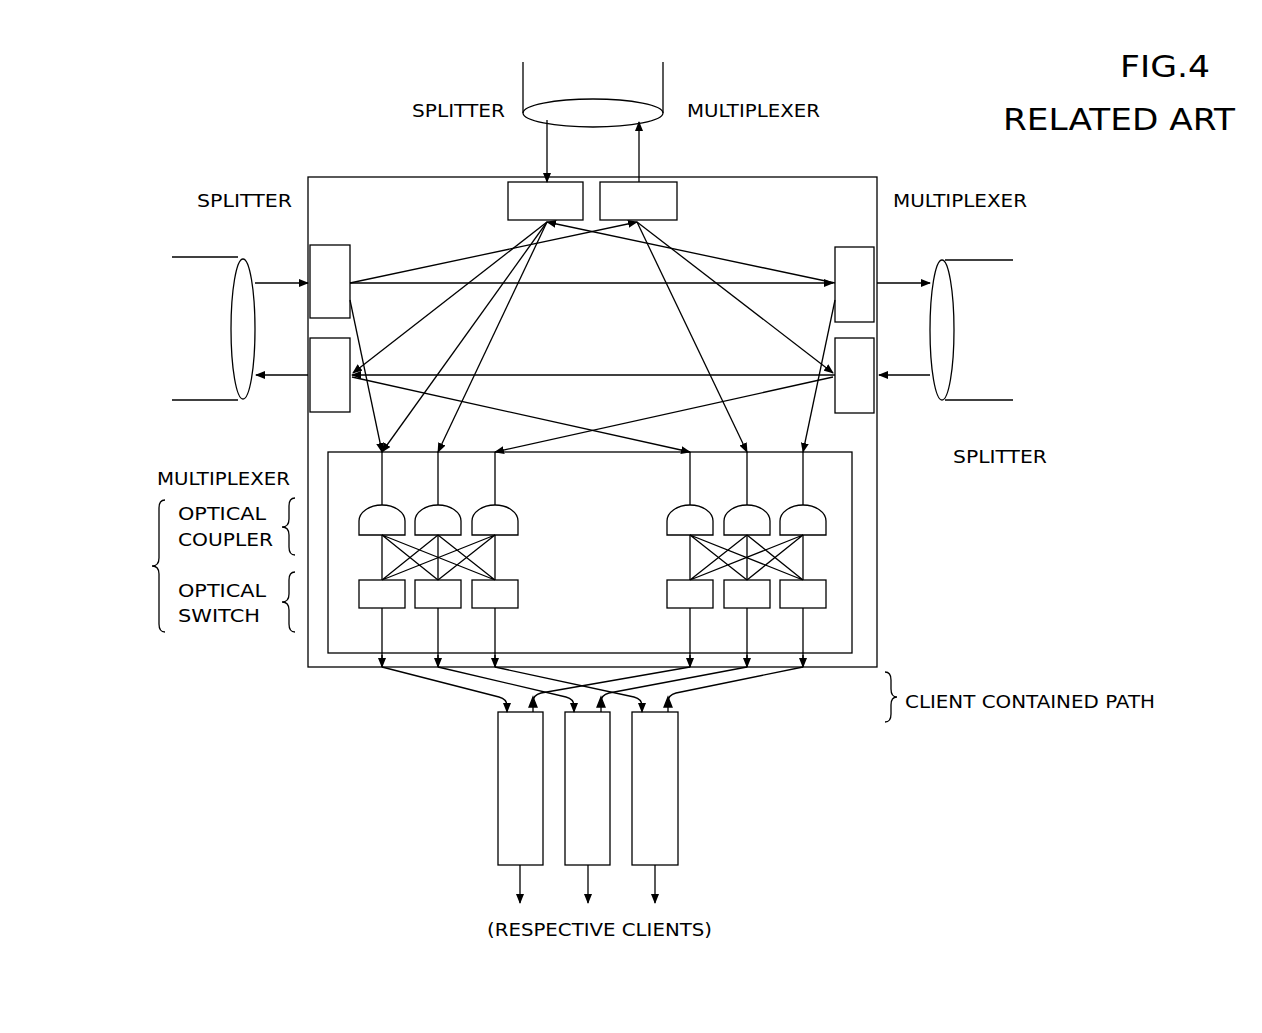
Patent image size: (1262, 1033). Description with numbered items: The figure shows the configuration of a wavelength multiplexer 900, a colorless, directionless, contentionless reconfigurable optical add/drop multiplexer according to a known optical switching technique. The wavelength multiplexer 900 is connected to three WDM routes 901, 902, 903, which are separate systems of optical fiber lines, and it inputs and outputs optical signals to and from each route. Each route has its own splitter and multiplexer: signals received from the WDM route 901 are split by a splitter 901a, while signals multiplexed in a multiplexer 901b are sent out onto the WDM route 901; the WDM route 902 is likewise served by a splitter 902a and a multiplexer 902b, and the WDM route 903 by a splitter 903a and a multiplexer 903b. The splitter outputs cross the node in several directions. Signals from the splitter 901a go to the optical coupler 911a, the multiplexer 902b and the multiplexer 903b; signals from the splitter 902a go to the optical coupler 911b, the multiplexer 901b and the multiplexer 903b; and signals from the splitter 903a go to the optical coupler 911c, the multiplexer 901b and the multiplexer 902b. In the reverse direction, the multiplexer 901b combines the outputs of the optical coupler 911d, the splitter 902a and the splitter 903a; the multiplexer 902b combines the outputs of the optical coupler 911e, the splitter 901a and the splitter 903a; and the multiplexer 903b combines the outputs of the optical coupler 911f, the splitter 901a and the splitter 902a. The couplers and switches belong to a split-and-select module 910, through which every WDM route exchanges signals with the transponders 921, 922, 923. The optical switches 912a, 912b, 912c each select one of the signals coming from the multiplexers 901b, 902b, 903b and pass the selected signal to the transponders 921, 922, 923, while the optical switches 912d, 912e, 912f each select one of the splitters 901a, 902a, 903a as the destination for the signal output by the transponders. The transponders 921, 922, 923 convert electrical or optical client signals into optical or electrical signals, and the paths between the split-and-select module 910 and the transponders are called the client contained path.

The wavelength multiplexer 900 is at (326, 177).
The WDM route 901 is at (233, 262).
The splitter 901a is at (333, 245).
The multiplexer 901b is at (310, 414).
The WDM route 902 is at (943, 261).
The splitter 902a is at (856, 414).
The multiplexer 902b is at (850, 247).
The WDM route 903 is at (522, 75).
The splitter 903a is at (511, 181).
The multiplexer 903b is at (660, 181).
The split-and-select module 910 is at (473, 552).
The optical coupler 911a is at (376, 505).
The optical coupler 911b is at (432, 505).
The optical coupler 911c is at (490, 505).
The optical coupler 911d is at (684, 505).
The optical coupler 911e is at (741, 505).
The optical coupler 911f is at (798, 505).
The optical switch 912a is at (386, 609).
The optical switch 912b is at (443, 609).
The optical switch 912c is at (500, 609).
The optical switch 912d is at (694, 609).
The optical switch 912e is at (751, 609).
The optical switch 912f is at (807, 609).
The transponder 921 is at (528, 868).
The transponder 922 is at (597, 868).
The transponder 923 is at (663, 868).